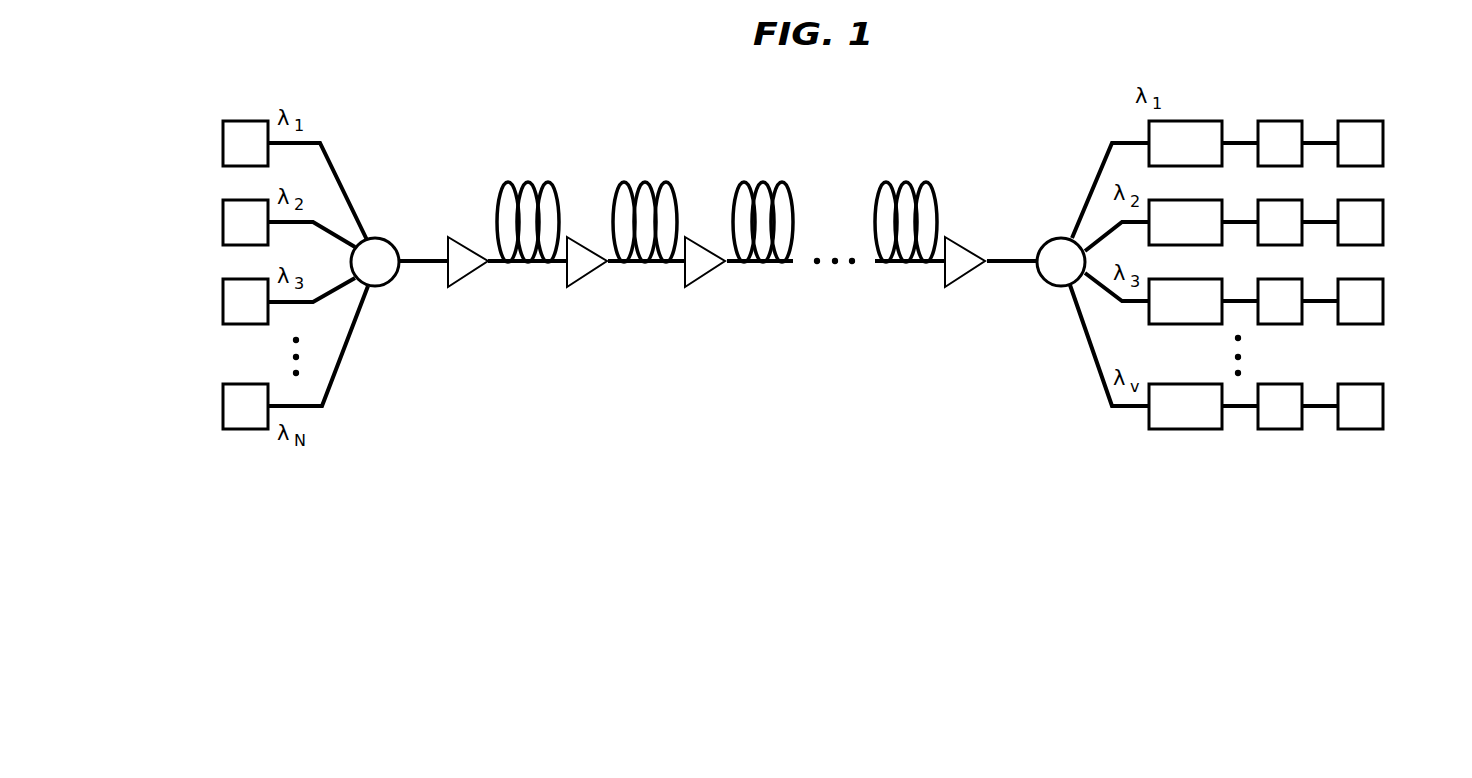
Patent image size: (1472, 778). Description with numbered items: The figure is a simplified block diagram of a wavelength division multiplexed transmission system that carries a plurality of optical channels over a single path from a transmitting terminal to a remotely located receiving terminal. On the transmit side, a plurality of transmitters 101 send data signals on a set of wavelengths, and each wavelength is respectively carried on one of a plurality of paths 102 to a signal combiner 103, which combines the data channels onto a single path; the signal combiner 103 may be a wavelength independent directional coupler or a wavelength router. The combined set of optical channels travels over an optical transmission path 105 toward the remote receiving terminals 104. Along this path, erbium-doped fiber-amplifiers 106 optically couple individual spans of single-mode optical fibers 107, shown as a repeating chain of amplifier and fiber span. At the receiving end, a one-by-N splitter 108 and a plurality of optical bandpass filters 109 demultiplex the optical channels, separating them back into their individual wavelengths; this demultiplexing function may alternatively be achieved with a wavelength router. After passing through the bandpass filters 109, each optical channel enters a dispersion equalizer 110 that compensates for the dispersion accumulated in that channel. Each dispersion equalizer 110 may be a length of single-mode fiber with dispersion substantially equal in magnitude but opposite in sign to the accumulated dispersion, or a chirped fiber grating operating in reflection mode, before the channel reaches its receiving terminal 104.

The transmitters 101 is at (223, 412).
The paths 102 is at (340, 170).
The signal combiner 103 is at (393, 279).
The remote receiving terminals 104 is at (1383, 137).
The optical transmission path 105 is at (422, 258).
The erbium-doped fiber-amplifiers 106 is at (468, 277).
The single-mode optical fibers 107 is at (506, 182).
The 1×N splitter 108 is at (1040, 238).
The optical bandpass filters 109 is at (1197, 120).
The dispersion equalizer 110 is at (1280, 120).